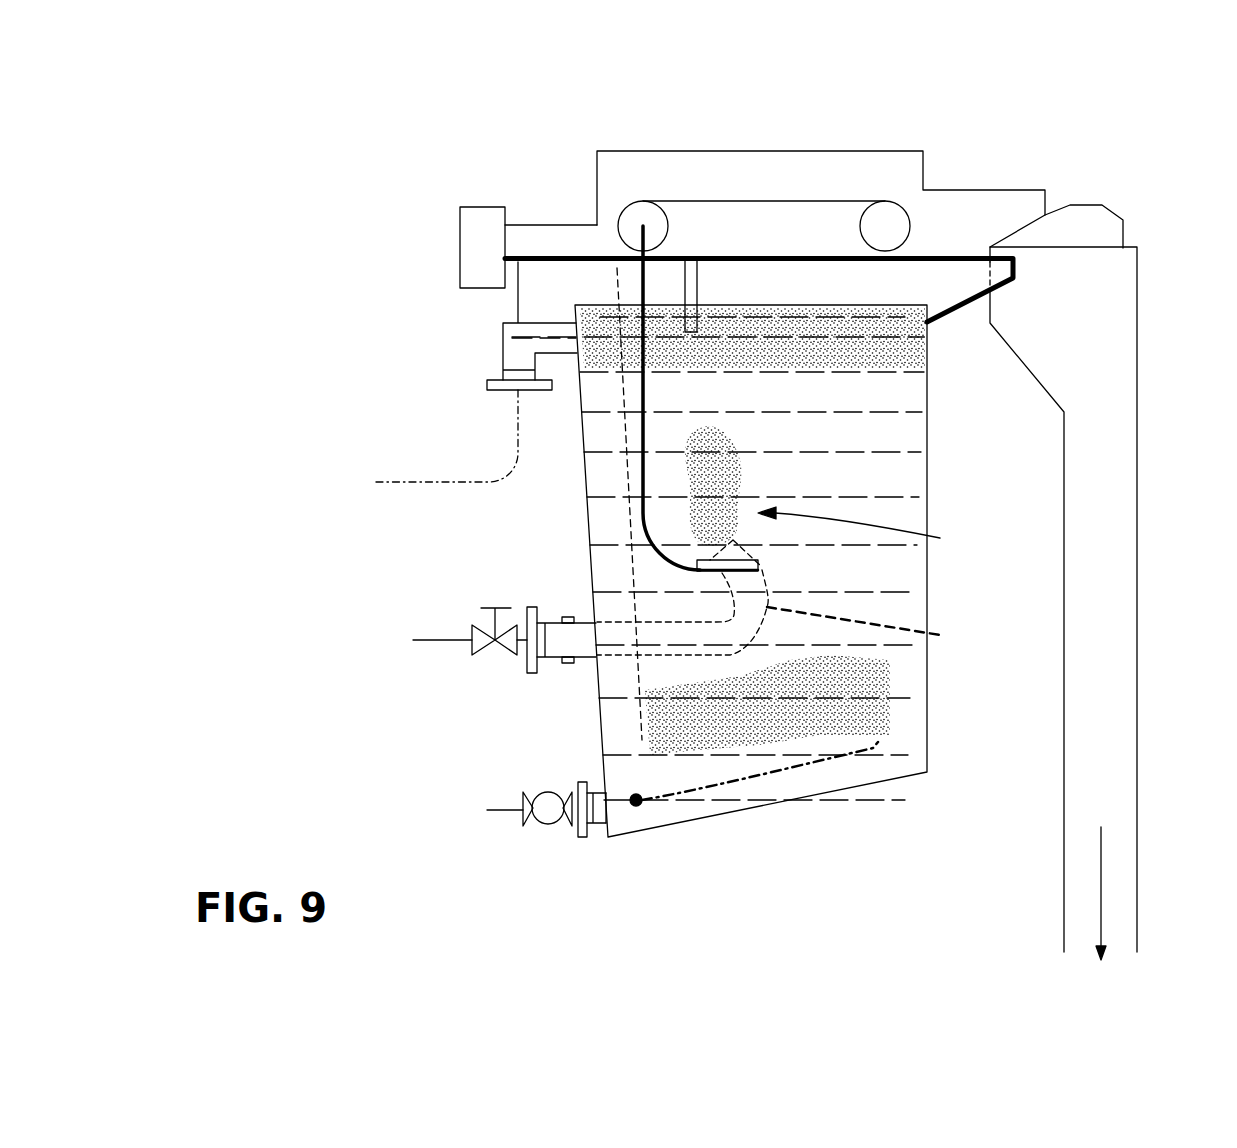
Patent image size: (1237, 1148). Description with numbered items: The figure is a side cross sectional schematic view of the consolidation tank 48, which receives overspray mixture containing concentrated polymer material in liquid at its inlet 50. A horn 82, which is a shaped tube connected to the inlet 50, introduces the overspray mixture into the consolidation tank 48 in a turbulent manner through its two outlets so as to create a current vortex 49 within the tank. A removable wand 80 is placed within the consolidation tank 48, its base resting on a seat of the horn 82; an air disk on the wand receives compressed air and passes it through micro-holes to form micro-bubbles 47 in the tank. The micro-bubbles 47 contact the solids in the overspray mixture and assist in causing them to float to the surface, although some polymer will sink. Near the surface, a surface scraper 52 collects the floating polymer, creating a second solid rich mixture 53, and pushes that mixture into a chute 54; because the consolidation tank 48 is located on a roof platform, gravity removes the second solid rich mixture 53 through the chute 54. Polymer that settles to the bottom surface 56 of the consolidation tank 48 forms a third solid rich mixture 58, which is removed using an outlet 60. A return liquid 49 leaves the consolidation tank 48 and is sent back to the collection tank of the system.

The consolidation tank 48 is at (880, 112).
The surface scraper 52 is at (697, 293).
The second solid rich mixture 53 is at (898, 327).
The chute 54 is at (1115, 445).
The micro-bubbles 47 is at (740, 482).
The return liquid / current vortex 49 is at (864, 531).
The removable wand 80 is at (640, 470).
The horn 82 is at (782, 597).
The inlet 50 is at (527, 662).
The third solid rich mixture 58 is at (508, 810).
The outlet 60 is at (607, 820).
The bottom surface 56 is at (783, 800).